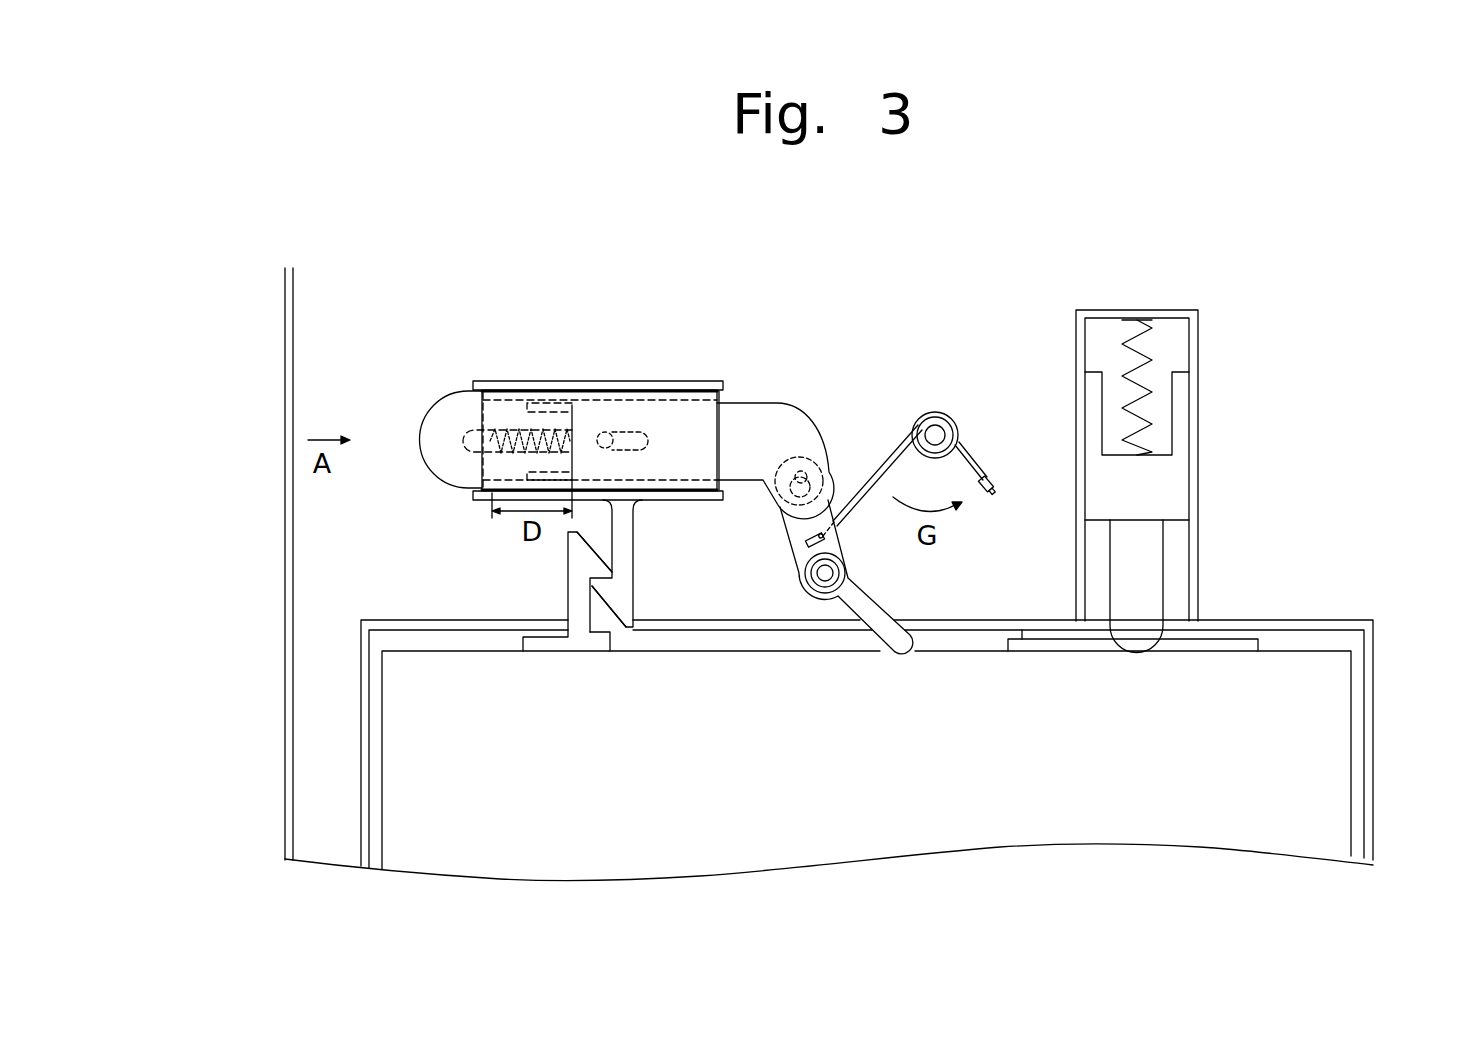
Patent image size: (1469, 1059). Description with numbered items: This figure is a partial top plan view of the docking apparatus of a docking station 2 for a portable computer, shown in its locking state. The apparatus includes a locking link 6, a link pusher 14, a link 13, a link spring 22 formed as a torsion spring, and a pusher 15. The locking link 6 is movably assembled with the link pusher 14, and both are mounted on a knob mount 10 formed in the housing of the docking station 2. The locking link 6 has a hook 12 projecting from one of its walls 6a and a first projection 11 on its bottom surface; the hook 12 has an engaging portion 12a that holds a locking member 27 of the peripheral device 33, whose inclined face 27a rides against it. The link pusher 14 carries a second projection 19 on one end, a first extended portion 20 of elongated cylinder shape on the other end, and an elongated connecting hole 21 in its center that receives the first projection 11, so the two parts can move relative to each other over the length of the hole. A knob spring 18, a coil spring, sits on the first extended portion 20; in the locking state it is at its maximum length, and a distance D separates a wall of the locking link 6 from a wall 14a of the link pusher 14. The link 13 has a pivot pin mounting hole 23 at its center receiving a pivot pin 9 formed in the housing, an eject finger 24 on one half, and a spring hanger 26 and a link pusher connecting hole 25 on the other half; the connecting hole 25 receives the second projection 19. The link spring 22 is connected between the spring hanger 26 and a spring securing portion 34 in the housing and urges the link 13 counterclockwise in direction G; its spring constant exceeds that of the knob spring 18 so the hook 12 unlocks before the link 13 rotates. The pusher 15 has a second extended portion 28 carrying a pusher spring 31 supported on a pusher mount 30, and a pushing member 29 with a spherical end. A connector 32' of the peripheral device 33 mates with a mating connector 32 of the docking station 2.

The docking station 2 is at (276, 571).
The locking link 6 is at (423, 471).
The wall of the locking link 6a is at (672, 495).
The pivot pin 9 is at (830, 573).
The knob mount 10 is at (532, 387).
The first projection 11 is at (604, 432).
The hook 12 is at (622, 585).
The hook 12a is at (605, 612).
The link 13 is at (847, 577).
The link pusher 14 is at (773, 418).
The wall of the link pusher 14a is at (565, 413).
The pusher 15 is at (1170, 482).
The knob spring 18 is at (489, 405).
The second projection 19 is at (805, 470).
The first extended portion 20 is at (463, 437).
The elongated connecting hole 21 is at (633, 428).
The link spring 22 is at (896, 440).
The pivot pin mounting hole 23 is at (838, 557).
The eject finger 24 is at (878, 612).
The link pusher connecting hole 25 is at (775, 504).
The spring hanger 26 is at (806, 545).
The locking member 27 is at (578, 588).
The inclined surface 27a is at (590, 543).
The second extended portion 28 is at (1140, 415).
The pushing member 29 is at (1137, 572).
The pusher mount 30 is at (1198, 340).
The pusher spring 31 is at (1140, 322).
The mating connector 32 is at (867, 724).
The connector 32' is at (884, 725).
The peripheral device 33 is at (1328, 756).
The spring securing portion 34 is at (998, 482).